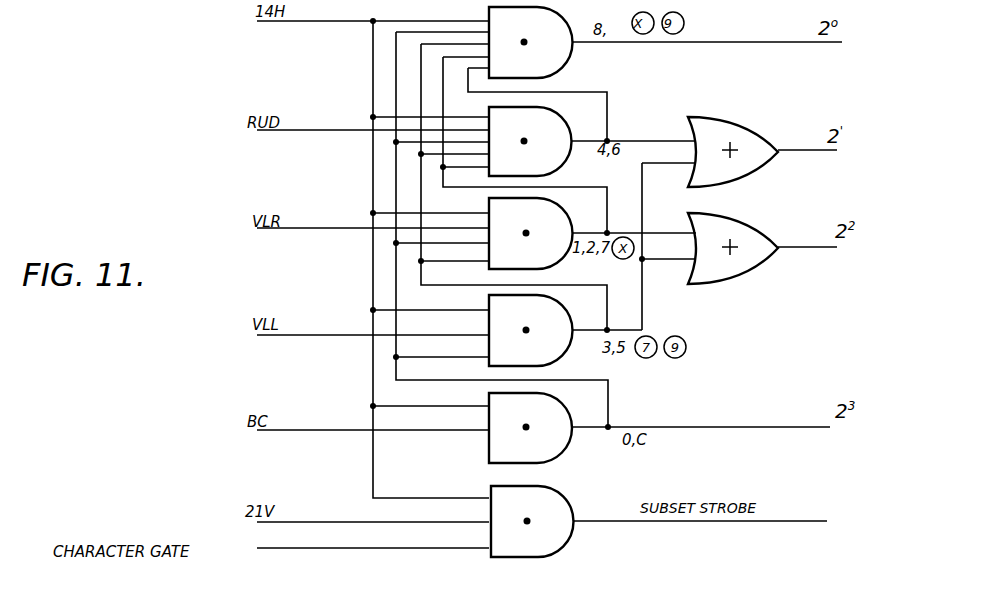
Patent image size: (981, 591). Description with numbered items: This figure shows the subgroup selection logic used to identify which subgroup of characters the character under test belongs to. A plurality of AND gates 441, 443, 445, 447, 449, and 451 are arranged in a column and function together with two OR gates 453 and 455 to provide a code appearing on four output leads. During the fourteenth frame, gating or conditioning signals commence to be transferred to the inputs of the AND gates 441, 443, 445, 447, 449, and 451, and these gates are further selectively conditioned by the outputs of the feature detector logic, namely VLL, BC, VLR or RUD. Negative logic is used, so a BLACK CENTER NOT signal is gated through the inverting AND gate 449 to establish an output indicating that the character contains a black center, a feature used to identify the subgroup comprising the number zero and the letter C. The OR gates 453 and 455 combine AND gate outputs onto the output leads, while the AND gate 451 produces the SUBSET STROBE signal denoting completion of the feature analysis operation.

The AND gate 441 is at (560, 65).
The AND gate 443 is at (560, 163).
The AND gate 445 is at (558, 260).
The AND gate 447 is at (558, 358).
The inverting AND gate 449 is at (560, 453).
The AND gate 451 is at (560, 547).
The OR gate 453 is at (757, 172).
The OR gate 455 is at (757, 270).